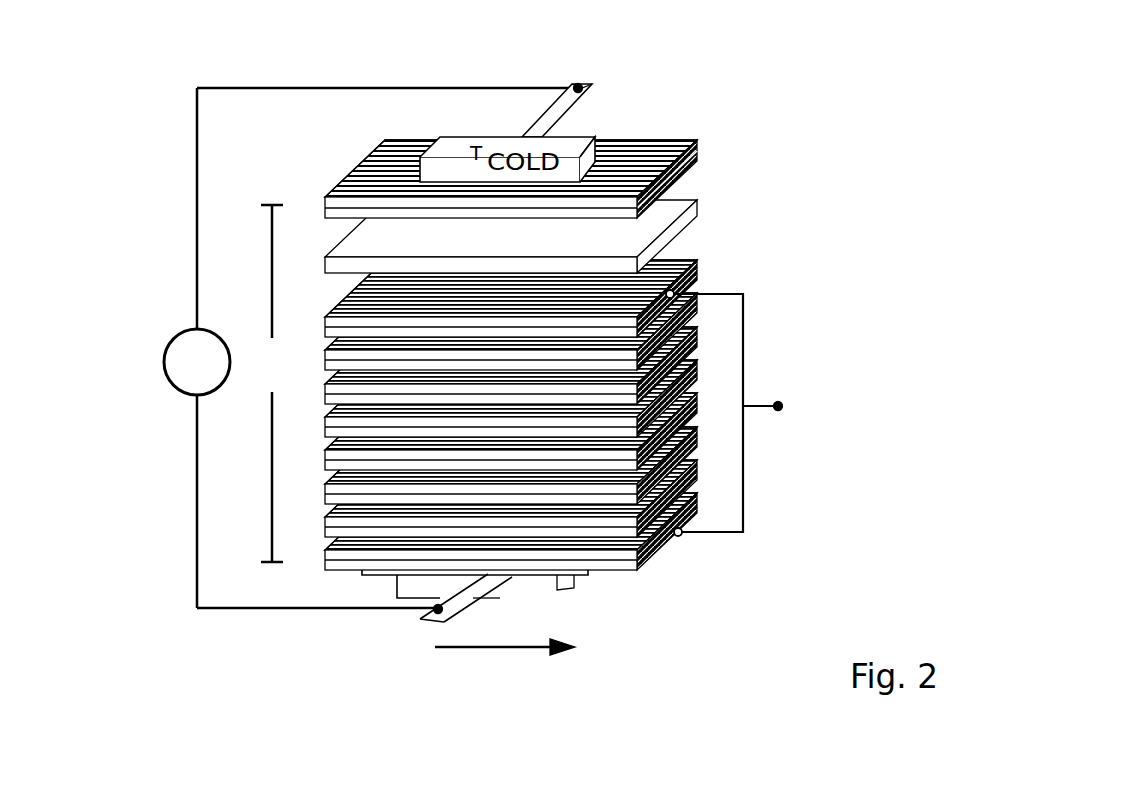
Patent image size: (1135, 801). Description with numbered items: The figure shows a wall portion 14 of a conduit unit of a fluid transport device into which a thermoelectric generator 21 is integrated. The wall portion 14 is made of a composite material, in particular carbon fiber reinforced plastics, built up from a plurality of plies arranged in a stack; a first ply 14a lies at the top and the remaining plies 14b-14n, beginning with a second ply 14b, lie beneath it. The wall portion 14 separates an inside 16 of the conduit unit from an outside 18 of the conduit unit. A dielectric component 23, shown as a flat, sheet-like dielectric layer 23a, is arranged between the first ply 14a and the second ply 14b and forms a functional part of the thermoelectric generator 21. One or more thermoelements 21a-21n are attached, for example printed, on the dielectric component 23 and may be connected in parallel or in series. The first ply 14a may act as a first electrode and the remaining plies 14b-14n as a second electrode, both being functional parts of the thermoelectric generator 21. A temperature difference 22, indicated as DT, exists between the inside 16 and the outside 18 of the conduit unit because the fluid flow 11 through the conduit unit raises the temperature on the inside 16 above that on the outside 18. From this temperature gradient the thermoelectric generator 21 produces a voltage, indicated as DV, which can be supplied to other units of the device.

The fluid flow 11 is at (517, 647).
The wall portion 14 is at (636, 321).
The first ply 14a is at (697, 150).
The second ply 14b is at (695, 278).
The remaining plies 14b-14n is at (636, 405).
The inside of the conduit unit 16 is at (607, 615).
The outside of the conduit unit 18 is at (622, 122).
The thermoelectric generator 21 is at (172, 128).
The thermoelements 21a-21n is at (397, 233).
The temperature difference 22 is at (268, 292).
The dielectric component 23 is at (594, 215).
The dielectric layer 23a is at (642, 235).